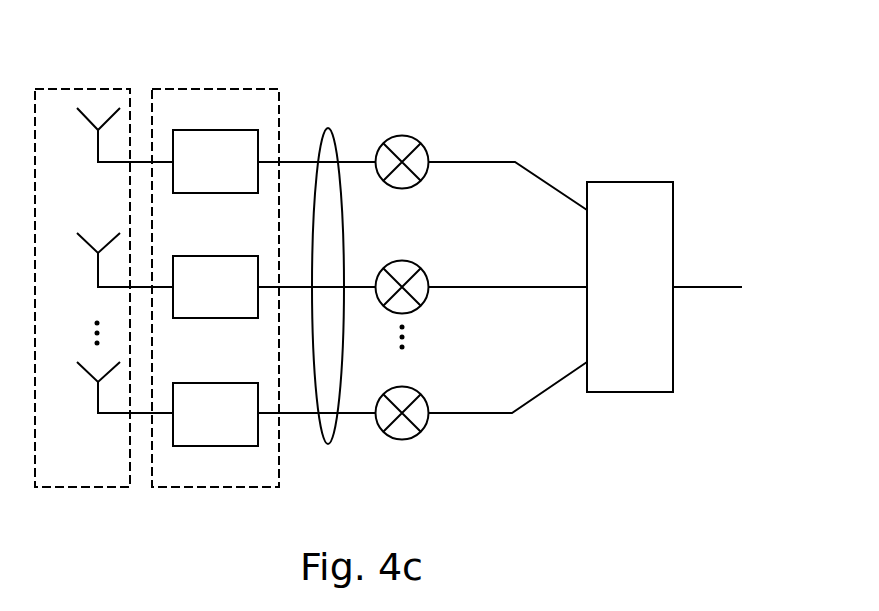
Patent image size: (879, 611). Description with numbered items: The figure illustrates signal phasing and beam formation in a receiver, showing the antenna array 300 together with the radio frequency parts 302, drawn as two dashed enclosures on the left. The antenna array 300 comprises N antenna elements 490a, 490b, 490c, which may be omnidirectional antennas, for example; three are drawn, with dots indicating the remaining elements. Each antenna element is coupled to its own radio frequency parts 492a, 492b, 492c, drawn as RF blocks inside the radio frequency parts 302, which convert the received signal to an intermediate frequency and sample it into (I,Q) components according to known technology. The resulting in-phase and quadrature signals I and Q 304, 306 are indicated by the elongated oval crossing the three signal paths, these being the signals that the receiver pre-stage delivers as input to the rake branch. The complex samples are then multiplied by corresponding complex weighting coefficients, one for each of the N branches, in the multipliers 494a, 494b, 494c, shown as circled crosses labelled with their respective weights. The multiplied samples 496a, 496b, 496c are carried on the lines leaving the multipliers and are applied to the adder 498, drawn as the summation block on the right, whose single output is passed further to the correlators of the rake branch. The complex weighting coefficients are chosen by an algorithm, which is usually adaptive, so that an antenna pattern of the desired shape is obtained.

The antenna array 300 is at (86, 89).
The radio frequency parts 302 is at (208, 89).
The signal I 304 is at (379, 314).
The signal Q 306 is at (325, 443).
The antenna element 490a is at (98, 143).
The antenna element 490b is at (98, 268).
The antenna element 490c is at (98, 392).
The radio frequency parts 492a is at (193, 194).
The radio frequency parts 492b is at (191, 318).
The radio frequency parts 492c is at (190, 446).
The multiplier 494a is at (432, 150).
The multiplier 494b is at (463, 255).
The multiplier 494c is at (432, 403).
The multiplied samples 496a is at (482, 159).
The multiplied samples 496b is at (482, 284).
The multiplied samples 496c is at (487, 418).
The adder 498 is at (607, 392).